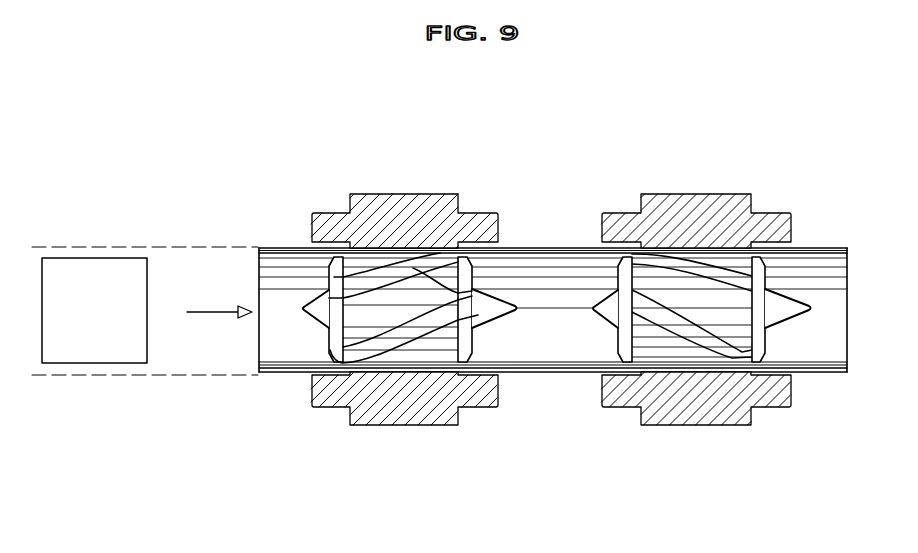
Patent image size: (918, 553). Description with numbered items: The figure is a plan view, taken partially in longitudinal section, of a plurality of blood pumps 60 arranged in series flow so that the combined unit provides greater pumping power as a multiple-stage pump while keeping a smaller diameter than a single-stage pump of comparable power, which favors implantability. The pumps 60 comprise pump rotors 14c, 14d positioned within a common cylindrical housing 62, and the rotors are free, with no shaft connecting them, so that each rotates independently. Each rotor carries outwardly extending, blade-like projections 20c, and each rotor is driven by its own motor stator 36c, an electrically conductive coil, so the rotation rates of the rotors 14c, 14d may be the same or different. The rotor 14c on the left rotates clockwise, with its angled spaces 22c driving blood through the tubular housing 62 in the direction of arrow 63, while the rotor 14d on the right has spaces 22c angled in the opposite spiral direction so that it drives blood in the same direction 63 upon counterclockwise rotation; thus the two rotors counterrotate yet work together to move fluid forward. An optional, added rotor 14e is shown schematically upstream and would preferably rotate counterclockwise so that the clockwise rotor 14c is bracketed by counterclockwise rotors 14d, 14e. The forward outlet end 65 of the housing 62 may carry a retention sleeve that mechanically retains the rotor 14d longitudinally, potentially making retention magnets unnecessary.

The rotor 14e is at (81, 323).
The arrow 63 is at (215, 313).
The cylindrical housing 62 is at (276, 234).
The blood pump 60 is at (546, 238).
The motor stator 36c is at (386, 186).
The blade-like projection 20c is at (723, 292).
The outlet end 65 is at (835, 255).
The pump rotor 14c is at (385, 318).
The pump rotor 14d is at (687, 292).
The space 22c is at (398, 337).